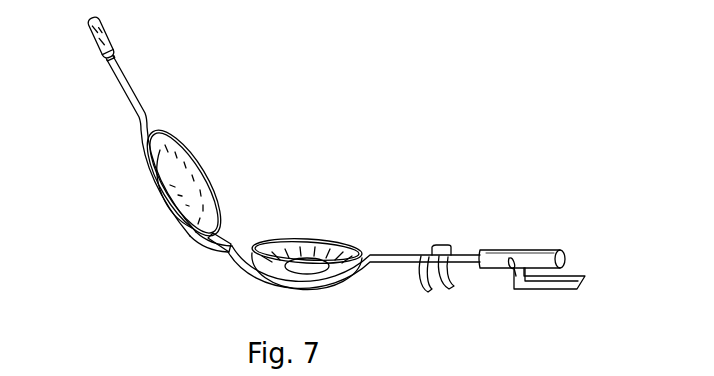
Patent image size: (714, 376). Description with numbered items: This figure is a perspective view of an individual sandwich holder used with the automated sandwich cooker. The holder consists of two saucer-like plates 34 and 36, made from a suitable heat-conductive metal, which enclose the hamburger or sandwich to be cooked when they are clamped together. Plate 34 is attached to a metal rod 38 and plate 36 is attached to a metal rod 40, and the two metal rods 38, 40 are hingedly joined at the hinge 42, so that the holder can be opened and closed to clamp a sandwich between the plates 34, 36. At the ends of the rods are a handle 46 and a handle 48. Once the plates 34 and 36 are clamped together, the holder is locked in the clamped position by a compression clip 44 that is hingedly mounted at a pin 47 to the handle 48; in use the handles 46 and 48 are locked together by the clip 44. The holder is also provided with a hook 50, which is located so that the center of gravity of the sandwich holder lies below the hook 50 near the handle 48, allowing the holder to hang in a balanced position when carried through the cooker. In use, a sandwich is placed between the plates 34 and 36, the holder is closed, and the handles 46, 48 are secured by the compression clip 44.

The saucer-like plate 34 is at (200, 166).
The saucer-like plate 36 is at (300, 240).
The metal rod 38 is at (137, 96).
The metal rod 40 is at (392, 263).
The hinge 42 is at (233, 246).
The compression clip 44 is at (584, 277).
The handle 46 is at (115, 46).
The pin 47 is at (507, 270).
The handle 48 is at (521, 251).
The hook 50 is at (430, 292).